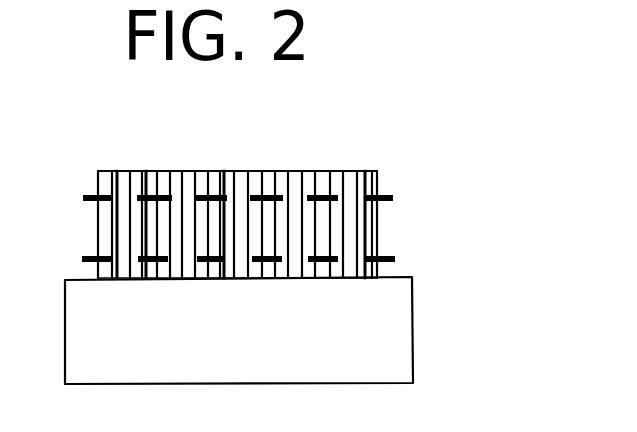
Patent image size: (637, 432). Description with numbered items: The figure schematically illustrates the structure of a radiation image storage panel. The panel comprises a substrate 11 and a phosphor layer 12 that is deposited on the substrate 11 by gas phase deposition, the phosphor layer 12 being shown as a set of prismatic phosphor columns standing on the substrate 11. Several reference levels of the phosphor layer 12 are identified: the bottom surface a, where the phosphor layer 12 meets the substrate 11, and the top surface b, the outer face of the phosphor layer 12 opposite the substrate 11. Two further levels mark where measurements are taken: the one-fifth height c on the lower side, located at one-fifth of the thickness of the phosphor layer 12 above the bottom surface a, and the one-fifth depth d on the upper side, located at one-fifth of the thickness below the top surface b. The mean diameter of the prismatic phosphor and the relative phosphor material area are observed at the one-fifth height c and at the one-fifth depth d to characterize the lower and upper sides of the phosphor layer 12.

The substrate 11 is at (413, 345).
The phosphor layer 12 is at (380, 223).
The bottom surface a is at (370, 278).
The top surface b is at (352, 171).
The 1/5 height on the lower side c is at (395, 255).
The 1/5 depth on the upper side d is at (395, 192).